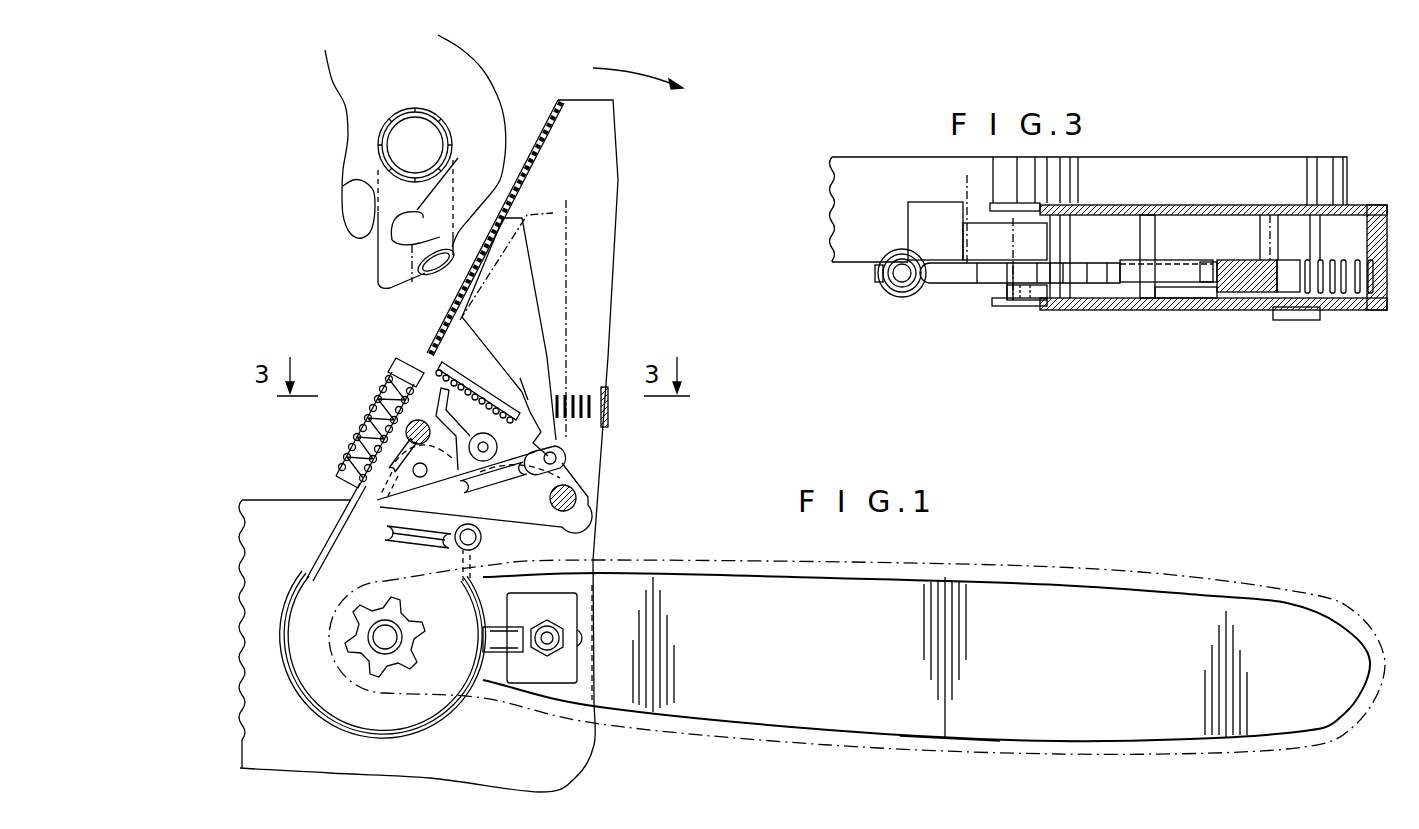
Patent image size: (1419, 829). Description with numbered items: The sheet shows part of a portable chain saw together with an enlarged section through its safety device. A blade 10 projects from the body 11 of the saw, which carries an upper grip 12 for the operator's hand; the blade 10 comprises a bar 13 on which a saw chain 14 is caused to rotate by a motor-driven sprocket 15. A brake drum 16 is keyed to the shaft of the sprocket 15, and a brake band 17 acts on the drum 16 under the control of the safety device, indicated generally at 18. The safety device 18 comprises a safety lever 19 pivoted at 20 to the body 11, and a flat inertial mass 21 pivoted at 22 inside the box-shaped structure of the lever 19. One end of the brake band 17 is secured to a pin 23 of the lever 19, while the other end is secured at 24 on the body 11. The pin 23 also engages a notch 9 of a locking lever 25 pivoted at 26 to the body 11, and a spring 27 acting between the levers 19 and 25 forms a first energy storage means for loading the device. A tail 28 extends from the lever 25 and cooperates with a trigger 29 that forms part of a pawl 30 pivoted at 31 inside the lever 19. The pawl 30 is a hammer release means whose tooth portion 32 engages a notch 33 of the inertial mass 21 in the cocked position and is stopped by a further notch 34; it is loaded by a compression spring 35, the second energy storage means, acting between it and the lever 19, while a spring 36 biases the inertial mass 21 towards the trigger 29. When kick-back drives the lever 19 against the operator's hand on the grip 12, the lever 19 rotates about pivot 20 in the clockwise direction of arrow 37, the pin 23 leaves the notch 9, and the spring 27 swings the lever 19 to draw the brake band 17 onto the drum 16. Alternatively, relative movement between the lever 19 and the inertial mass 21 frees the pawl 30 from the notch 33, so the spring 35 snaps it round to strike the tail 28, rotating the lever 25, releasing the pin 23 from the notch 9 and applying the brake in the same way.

In FIG. 1, the notch 9 is at (403, 387).
In FIG. 3, the notch 9 is at (1010, 283).
In FIG. 1, the blade 10 is at (1060, 592).
In FIG. 1, the body 11 is at (273, 768).
In FIG. 3, the body 11 is at (1172, 157).
In FIG. 1, the upper grip 12 is at (382, 162).
In FIG. 1, the bar 13 is at (848, 710).
In FIG. 1, the saw chain 14 is at (947, 743).
In FIG. 1, the sprocket 15 is at (370, 675).
In FIG. 1, the brake drum 16 is at (313, 670).
In FIG. 1, the brake band 17 is at (333, 525).
In FIG. 3, the brake band 17 is at (937, 232).
In FIG. 1, the safety device 18 is at (431, 331).
In FIG. 3, the safety device 18 is at (1107, 310).
In FIG. 1, the safety lever 19 is at (601, 195).
In FIG. 3, the safety lever 19 is at (1180, 307).
In FIG. 1, the pivot 20 is at (578, 503).
In FIG. 3, the pivot 20 is at (1290, 243).
In FIG. 1, the inertial mass 21 is at (570, 183).
In FIG. 3, the inertial mass 21 is at (1253, 290).
In FIG. 1, the pivot 22 is at (562, 462).
In FIG. 3, the pivot 22 is at (1263, 237).
In FIG. 1, the pin 23 is at (408, 430).
In FIG. 3, the pin 23 is at (1030, 297).
In FIG. 1, the securing point 24 is at (481, 540).
In FIG. 1, the locking lever 25 is at (337, 478).
In FIG. 3, the locking lever 25 is at (880, 275).
In FIG. 1, the pivot 26 is at (367, 443).
In FIG. 1, the spring 27 is at (345, 463).
In FIG. 3, the spring 27 is at (935, 298).
In FIG. 1, the tail 28 is at (517, 470).
In FIG. 3, the tail 28 is at (1208, 296).
In FIG. 1, the trigger 29 is at (512, 474).
In FIG. 1, the pawl 30 is at (498, 433).
In FIG. 3, the pawl 30 is at (1173, 273).
In FIG. 1, the pivot 31 is at (483, 452).
In FIG. 3, the pivot 31 is at (1140, 235).
In FIG. 1, the tooth portion 32 is at (520, 380).
In FIG. 3, the tooth portion 32 is at (1208, 263).
In FIG. 1, the notch 33 is at (542, 447).
In FIG. 1, the notch 34 is at (560, 450).
In FIG. 1, the compression spring 35 is at (443, 377).
In FIG. 1, the spring 36 is at (583, 393).
In FIG. 3, the spring 36 is at (1337, 310).
In FIG. 1, the arrow 37 is at (504, 141).